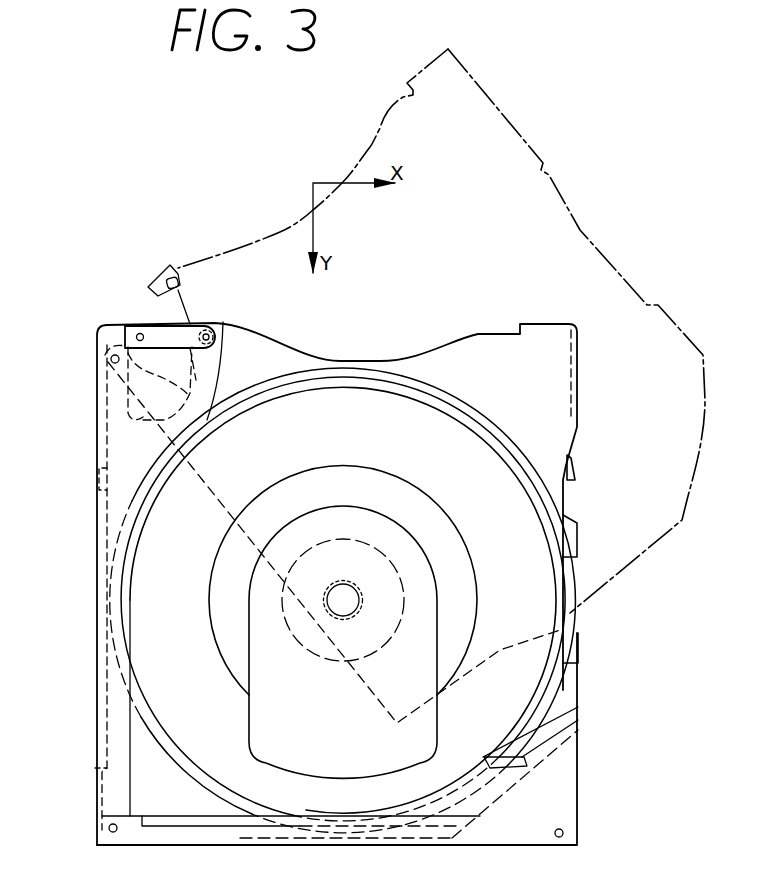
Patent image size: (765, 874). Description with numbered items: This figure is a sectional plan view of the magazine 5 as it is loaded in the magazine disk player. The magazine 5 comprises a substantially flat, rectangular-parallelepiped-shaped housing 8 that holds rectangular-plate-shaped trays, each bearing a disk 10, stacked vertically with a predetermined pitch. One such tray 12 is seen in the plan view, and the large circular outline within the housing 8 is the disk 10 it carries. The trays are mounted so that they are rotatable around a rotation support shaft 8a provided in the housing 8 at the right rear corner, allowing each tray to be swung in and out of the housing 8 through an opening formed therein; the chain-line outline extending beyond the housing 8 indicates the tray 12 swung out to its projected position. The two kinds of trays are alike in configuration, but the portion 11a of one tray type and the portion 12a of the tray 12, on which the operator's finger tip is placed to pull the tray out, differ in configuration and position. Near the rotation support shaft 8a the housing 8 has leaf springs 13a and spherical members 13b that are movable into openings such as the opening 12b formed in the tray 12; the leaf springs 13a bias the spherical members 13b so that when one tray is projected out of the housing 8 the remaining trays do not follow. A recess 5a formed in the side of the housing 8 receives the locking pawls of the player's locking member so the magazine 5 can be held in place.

The magazine 5 is at (95, 318).
The recess 5a is at (97, 486).
The housing 8 is at (97, 750).
The rotation support shaft 8a is at (111, 359).
The disk 10 is at (578, 630).
The finger tip portion of tray 11a is at (578, 536).
The tray 12 is at (630, 293).
The finger tip portion of tray 12a is at (572, 470).
The opening 12b is at (165, 268).
The leaf spring 13a is at (152, 328).
The spherical member 13b is at (206, 326).